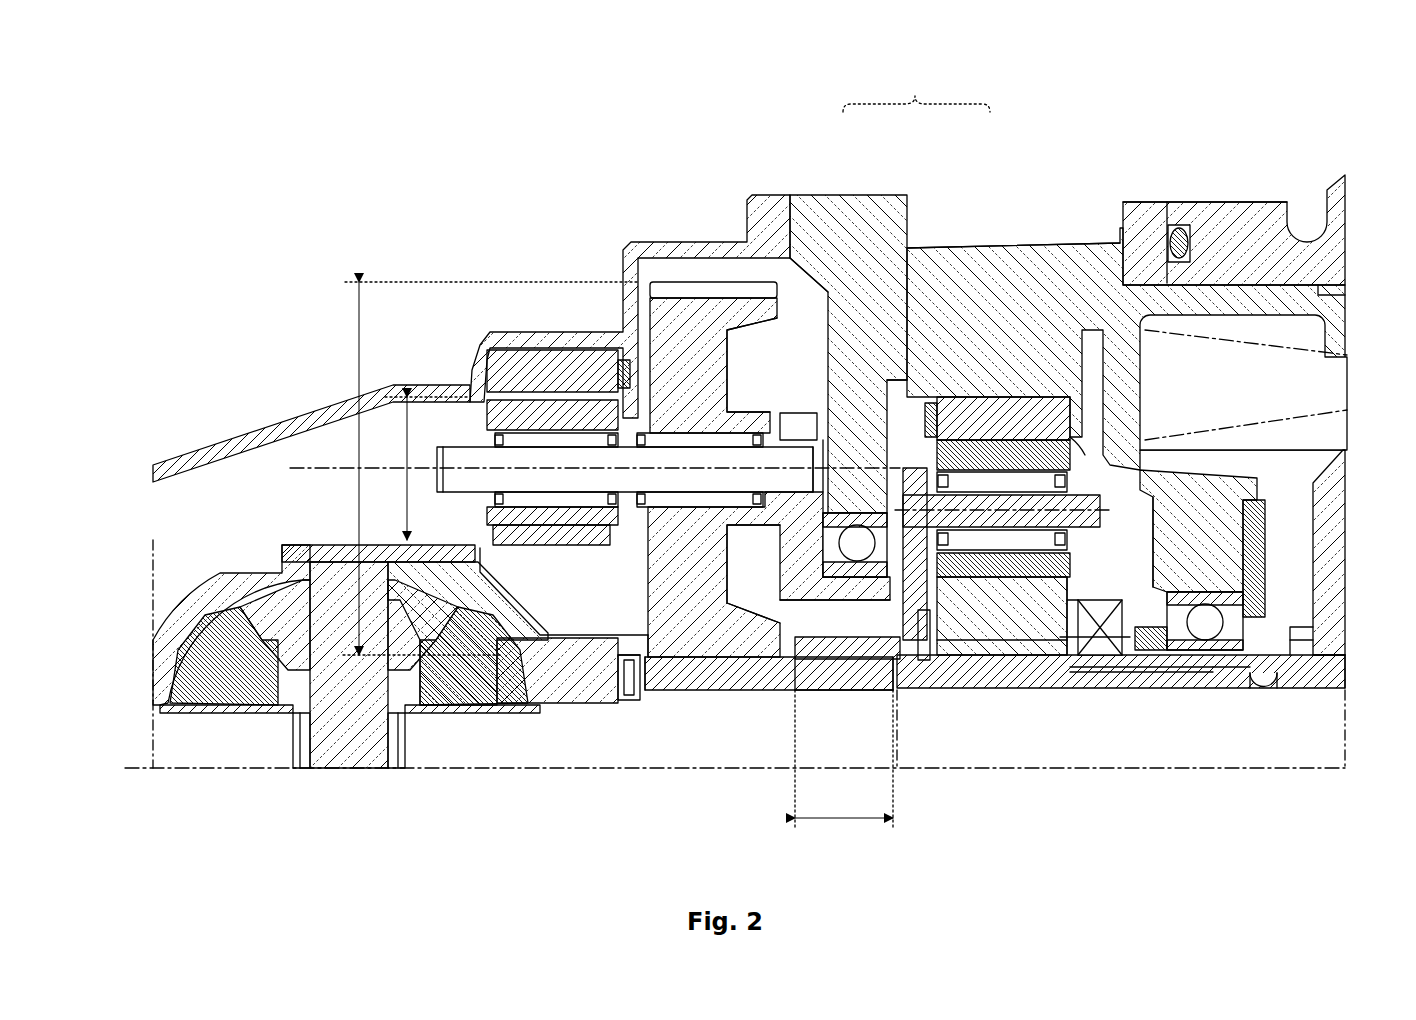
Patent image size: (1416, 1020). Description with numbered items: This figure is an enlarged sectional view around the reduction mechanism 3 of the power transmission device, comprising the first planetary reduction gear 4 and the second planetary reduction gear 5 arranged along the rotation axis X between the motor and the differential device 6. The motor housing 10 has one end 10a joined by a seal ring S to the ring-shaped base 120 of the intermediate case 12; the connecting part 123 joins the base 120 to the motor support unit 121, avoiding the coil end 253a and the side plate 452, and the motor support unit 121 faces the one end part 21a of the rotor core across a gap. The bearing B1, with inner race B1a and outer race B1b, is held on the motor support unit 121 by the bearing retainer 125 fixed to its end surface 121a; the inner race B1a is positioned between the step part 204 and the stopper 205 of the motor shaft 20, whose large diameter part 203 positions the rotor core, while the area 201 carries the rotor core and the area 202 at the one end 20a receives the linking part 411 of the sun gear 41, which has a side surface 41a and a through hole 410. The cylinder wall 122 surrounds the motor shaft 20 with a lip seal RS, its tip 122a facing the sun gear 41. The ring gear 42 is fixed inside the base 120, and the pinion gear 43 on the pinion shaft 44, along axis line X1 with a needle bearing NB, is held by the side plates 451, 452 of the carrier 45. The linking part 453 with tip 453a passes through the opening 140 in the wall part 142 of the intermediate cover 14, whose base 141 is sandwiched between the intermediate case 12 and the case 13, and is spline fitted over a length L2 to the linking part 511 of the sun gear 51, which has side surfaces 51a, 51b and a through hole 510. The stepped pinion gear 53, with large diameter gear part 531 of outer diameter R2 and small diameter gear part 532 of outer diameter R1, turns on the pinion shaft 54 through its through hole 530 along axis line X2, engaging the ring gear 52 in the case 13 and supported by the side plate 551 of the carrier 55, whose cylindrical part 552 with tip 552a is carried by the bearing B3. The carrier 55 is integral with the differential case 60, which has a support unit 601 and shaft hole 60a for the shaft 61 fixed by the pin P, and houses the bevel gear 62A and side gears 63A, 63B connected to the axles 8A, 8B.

The reduction mechanism 3 is at (916, 83).
The first planetary reduction gear 4 is at (988, 385).
The second planetary reduction gear 5 is at (795, 285).
The differential device 6 is at (240, 503).
The first axle 8A is at (172, 768).
The second axle 8B is at (500, 768).
The motor housing 10 is at (1285, 200).
The one end of the motor housing 10a is at (1150, 198).
The intermediate case 12 is at (1090, 250).
The case 13 is at (758, 194).
The intermediate cover 14 is at (808, 194).
The motor shaft 20 is at (1345, 672).
The one end of the motor shaft 20a is at (1062, 690).
The one end part of the rotor core 21a is at (1322, 600).
The sun gear 41 is at (975, 690).
The side surface of the sun gear 41a is at (1062, 622).
The ring gear 42 is at (1025, 405).
The pinion gear 43 is at (993, 372).
The pinion shaft 44 is at (1003, 490).
The carrier 45 is at (905, 425).
The sun gear 51 is at (724, 690).
The side surface of the sun gear 51a is at (780, 690).
The side surface of the sun gear 51b is at (640, 695).
The ring gear 52 is at (560, 365).
The stepped pinion gear 53 is at (600, 590).
The pinion shaft 54 is at (663, 552).
The carrier 55 is at (838, 338).
The differential case 60 is at (212, 572).
The shaft hole 60a is at (332, 543).
The shaft 61 is at (350, 768).
The bevel gear 62A is at (305, 650).
The side gear 63A is at (240, 700).
The side gear 63B is at (465, 700).
The base 120 is at (1045, 262).
The motor support unit 121 is at (1218, 445).
The end surface of the motor support unit 121a is at (1282, 445).
The cylinder wall 122 is at (1150, 515).
The tip of the cylinder wall 122a is at (1075, 600).
The connecting part 123 is at (1163, 446).
The bearing retainer 125 is at (1330, 535).
The opening 140 is at (867, 432).
The base 141 is at (820, 282).
The wall part 142 is at (818, 450).
The area 201 is at (1330, 690).
The area 202 is at (1225, 690).
The large diameter part 203 is at (1320, 650).
The step part 204 is at (1318, 630).
The stopper 205 is at (1140, 690).
The coil end 253a is at (1162, 292).
The through hole 410 is at (996, 630).
The linking part 411 is at (1250, 690).
The side plate 451 is at (930, 403).
The side plate 452 is at (1083, 432).
The linking part 453 is at (845, 690).
The tip of the linking part 453a is at (822, 660).
The through hole 510 is at (682, 690).
The linking part 511 is at (862, 700).
The through hole 530 is at (684, 430).
The large diameter gear part 531 is at (648, 560).
The small diameter gear part 532 is at (545, 525).
The side plate 551 is at (790, 425).
The cylindrical part 552 is at (830, 590).
The tip of the cylindrical part 552a is at (900, 600).
The support unit 601 is at (570, 703).
The bearing B1 is at (1210, 592).
The inner race B1a is at (1160, 627).
The outer race B1b is at (1265, 540).
The bearing B3 is at (823, 548).
The needle bearing NB is at (563, 447).
The lip seal RS is at (1100, 660).
The seal ring S is at (1190, 243).
The pin P is at (282, 552).
The rotation axis X is at (722, 769).
The axis line X1 is at (1017, 512).
The axis line X2 is at (578, 466).
The outer diameter R1 is at (421, 468).
The outer diameter R2 is at (480, 468).
The length L2 is at (844, 773).